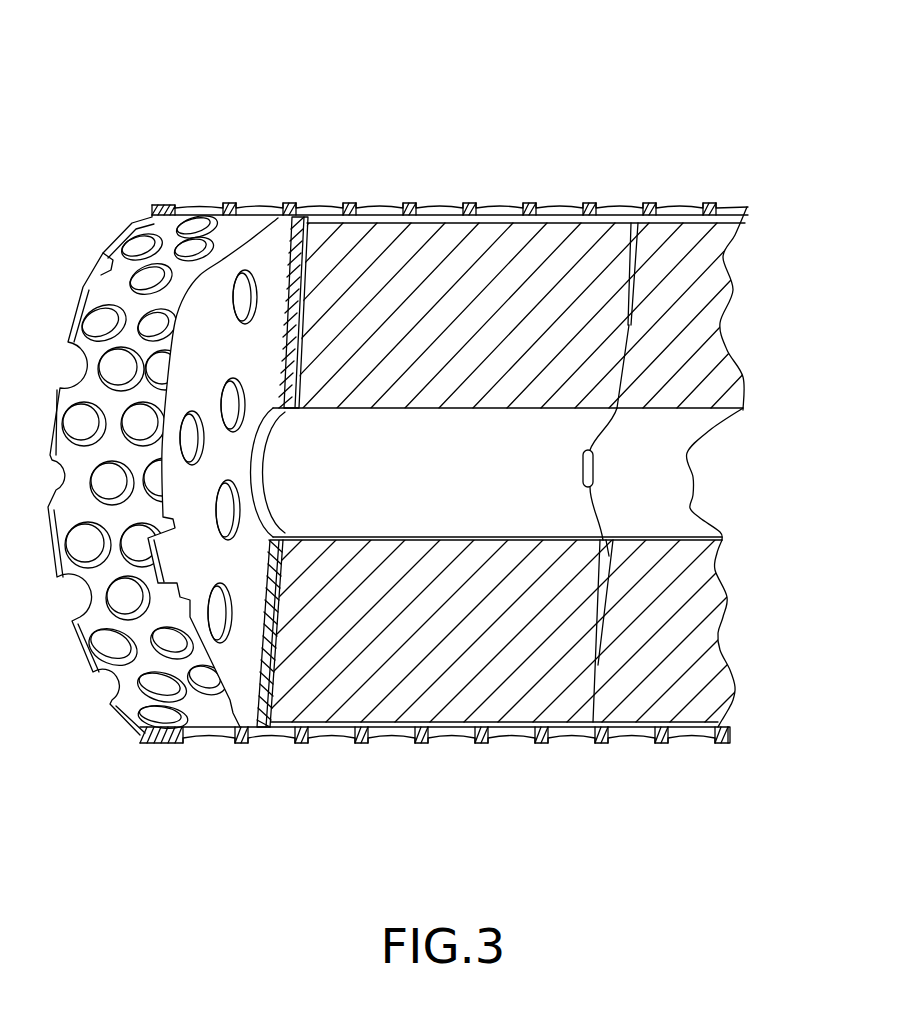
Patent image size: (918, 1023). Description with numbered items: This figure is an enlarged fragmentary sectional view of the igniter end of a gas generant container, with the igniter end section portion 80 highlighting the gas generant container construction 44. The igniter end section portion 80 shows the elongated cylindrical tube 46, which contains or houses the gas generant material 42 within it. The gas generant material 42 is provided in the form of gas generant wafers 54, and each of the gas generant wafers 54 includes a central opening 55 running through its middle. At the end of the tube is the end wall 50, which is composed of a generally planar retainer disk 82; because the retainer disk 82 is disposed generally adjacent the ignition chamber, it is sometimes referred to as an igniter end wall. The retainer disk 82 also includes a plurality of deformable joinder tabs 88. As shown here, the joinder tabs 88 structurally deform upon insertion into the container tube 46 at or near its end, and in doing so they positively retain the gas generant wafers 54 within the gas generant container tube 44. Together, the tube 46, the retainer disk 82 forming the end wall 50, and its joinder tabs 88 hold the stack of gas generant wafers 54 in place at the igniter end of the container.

The igniter end section portion 80 is at (448, 134).
The gas generant wafers 54 is at (368, 243).
The retainer disk 82 is at (270, 258).
The deformable joinder tabs 88 is at (158, 317).
The end wall 50 is at (283, 283).
The central opening 55 is at (470, 463).
The elongated cylindrical tube 46 is at (228, 742).
The gas generant container construction 44 is at (348, 770).
The gas generant material 42 is at (482, 683).